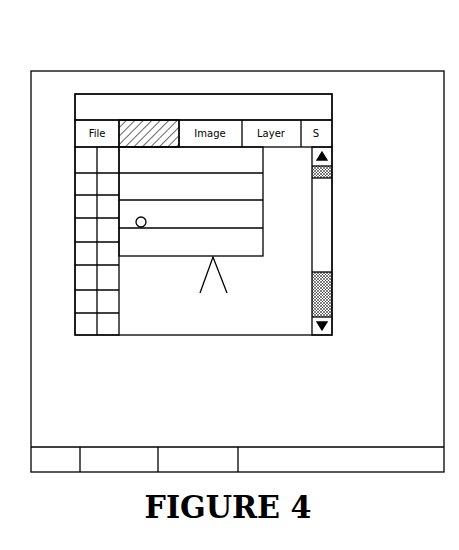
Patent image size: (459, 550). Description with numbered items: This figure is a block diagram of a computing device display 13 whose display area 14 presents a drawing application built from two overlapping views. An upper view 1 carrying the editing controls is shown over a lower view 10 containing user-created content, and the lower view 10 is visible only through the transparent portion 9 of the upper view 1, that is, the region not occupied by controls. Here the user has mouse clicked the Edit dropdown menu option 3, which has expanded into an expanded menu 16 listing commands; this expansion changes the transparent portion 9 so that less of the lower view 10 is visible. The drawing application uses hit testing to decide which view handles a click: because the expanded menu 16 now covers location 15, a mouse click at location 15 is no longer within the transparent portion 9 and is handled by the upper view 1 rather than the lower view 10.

The upper view 1 is at (152, 94).
The Edit dropdown menu option 3 is at (173, 127).
The transparent portion 9 is at (138, 335).
The lower view 10 is at (257, 335).
The computing device display 13 is at (95, 37).
The display area 14 is at (247, 94).
The location 15 is at (141, 227).
The expanded menu 16 is at (263, 160).